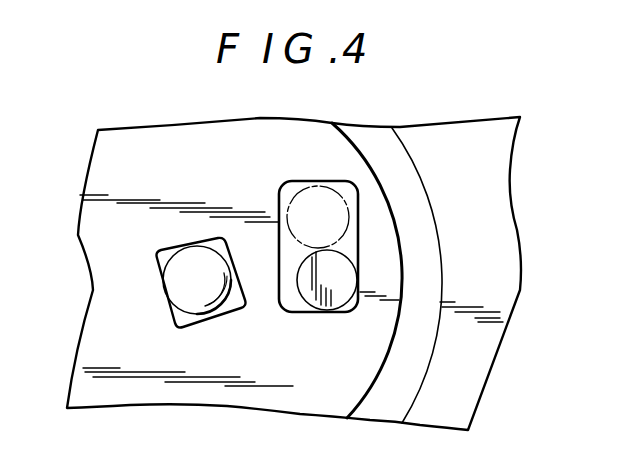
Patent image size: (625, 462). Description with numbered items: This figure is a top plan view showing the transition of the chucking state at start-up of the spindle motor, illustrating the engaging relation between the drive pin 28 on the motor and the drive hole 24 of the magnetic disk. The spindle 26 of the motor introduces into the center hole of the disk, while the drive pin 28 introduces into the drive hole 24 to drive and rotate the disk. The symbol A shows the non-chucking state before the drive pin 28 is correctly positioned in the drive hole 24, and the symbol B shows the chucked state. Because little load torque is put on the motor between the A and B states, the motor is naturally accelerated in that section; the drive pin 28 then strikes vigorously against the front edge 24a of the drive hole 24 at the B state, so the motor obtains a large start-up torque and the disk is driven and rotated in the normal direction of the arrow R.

The drive hole 24 is at (291, 187).
The front edge of the drive hole 24a is at (324, 311).
The spindle 26 is at (180, 291).
The drive pin 28 is at (306, 297).
The arrow indicating normal direction of rotation R is at (420, 137).
The non-chucking state A is at (318, 217).
The chucked state B is at (328, 228).